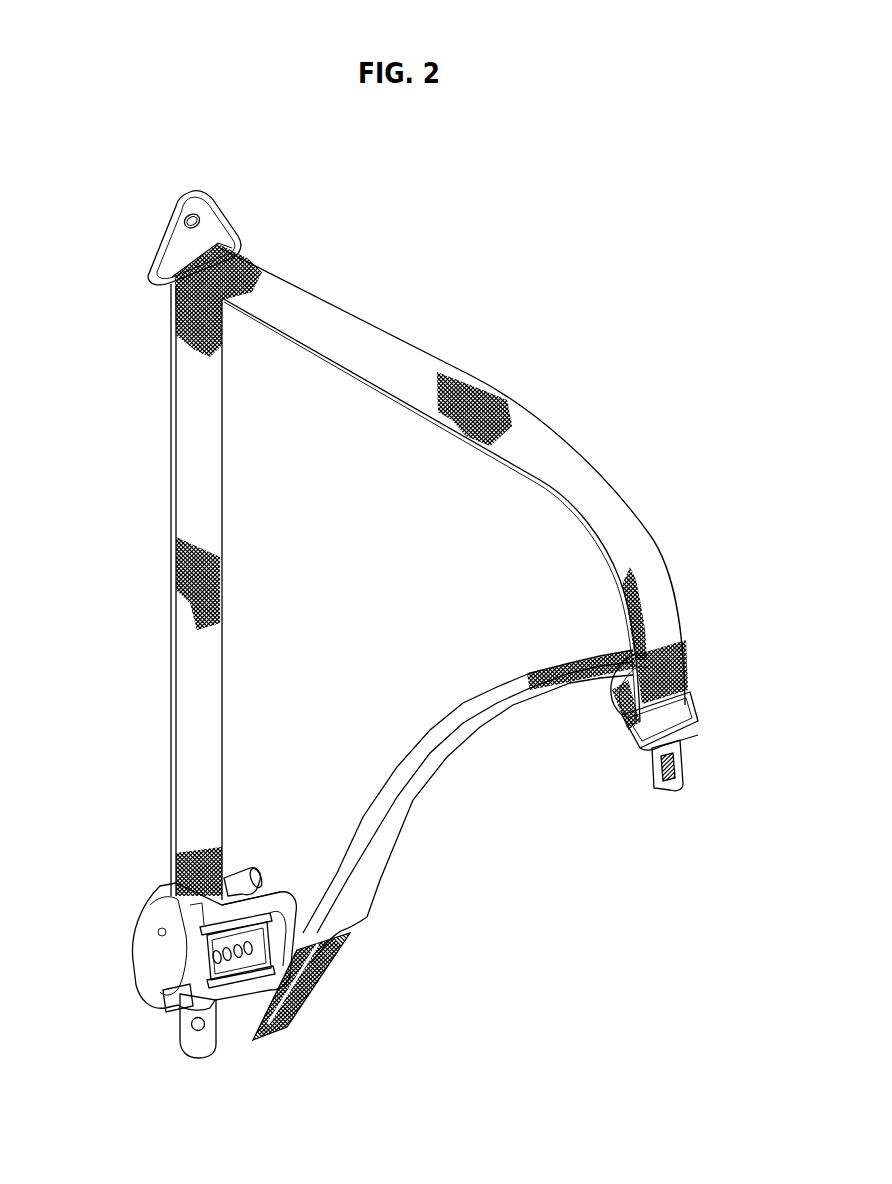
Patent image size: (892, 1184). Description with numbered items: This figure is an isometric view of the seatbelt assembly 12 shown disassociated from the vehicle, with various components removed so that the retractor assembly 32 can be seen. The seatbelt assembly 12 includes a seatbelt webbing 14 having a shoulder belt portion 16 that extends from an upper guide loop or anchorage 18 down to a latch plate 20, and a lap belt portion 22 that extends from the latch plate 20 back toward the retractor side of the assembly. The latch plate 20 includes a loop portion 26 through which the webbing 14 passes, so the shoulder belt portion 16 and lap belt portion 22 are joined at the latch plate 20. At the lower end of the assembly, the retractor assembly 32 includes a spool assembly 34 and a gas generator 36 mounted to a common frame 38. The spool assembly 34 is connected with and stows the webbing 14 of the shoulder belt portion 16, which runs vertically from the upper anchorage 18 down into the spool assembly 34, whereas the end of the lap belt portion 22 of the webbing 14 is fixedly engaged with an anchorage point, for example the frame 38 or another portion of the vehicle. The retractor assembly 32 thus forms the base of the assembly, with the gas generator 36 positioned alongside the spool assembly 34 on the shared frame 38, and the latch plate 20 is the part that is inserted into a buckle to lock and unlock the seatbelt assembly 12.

The seatbelt assembly 12 is at (486, 245).
The seatbelt webbing 14 is at (684, 674).
The shoulder belt portion 16 is at (644, 527).
The upper guide loop or anchorage 18 is at (160, 255).
The latch plate 20 is at (672, 746).
The lap belt portion 22 is at (396, 822).
The loop portion 26 is at (696, 708).
The retractor assembly 32 is at (272, 904).
The spool assembly 34 is at (170, 956).
The gas generator 36 is at (232, 872).
The common frame 38 is at (178, 1038).